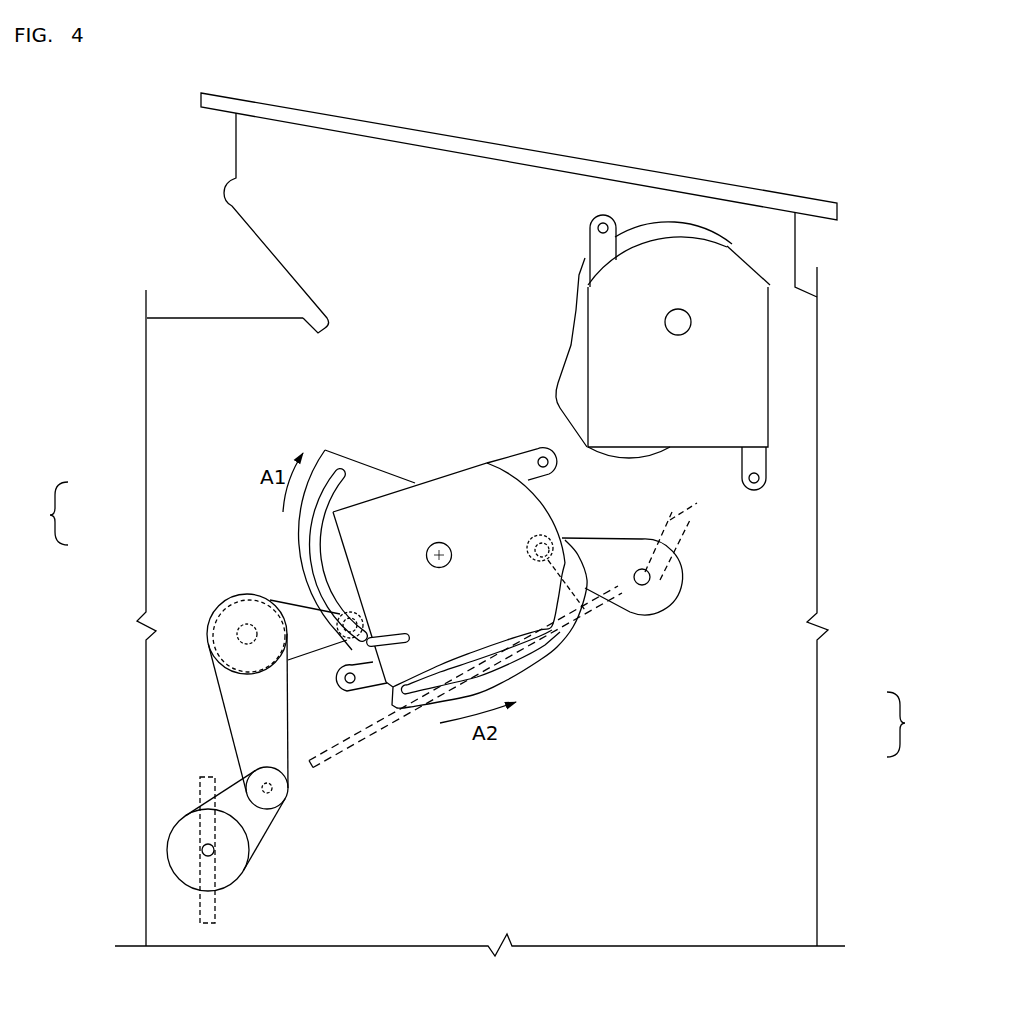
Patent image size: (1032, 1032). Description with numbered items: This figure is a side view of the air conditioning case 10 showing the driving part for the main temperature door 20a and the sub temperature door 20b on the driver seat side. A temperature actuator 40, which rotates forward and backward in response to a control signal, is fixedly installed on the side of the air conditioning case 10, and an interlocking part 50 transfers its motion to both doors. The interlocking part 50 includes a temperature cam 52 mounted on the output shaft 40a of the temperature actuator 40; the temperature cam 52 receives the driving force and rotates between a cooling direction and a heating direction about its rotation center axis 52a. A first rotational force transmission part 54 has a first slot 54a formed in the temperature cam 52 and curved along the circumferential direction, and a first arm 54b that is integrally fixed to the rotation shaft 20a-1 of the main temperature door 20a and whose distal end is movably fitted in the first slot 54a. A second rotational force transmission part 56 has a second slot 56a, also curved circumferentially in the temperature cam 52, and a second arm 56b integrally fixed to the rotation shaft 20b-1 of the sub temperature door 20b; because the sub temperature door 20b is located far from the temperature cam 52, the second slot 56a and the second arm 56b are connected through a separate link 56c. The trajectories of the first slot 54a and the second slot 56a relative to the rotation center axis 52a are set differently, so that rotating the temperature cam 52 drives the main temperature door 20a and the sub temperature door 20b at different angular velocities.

The air conditioning case 10 is at (438, 165).
The temperature actuator 40 is at (449, 374).
The output shaft 40a is at (433, 541).
The interlocking part 50 is at (661, 773).
The temperature cam 52 is at (550, 667).
The rotation center axis 52a is at (437, 568).
The first rotational force transmission part 54 is at (665, 662).
The first slot 54a is at (583, 645).
The first arm 54b is at (647, 617).
The second rotational force transmission part 56 is at (218, 728).
The second slot 56a is at (320, 518).
The second arm 56b is at (240, 803).
The link 56c is at (278, 755).
The main temperature door 20a is at (352, 750).
The rotation shaft of the main temperature door 20a-1 is at (667, 557).
The sub temperature door 20b is at (200, 792).
The rotation shaft of the sub temperature door 20b-1 is at (202, 848).